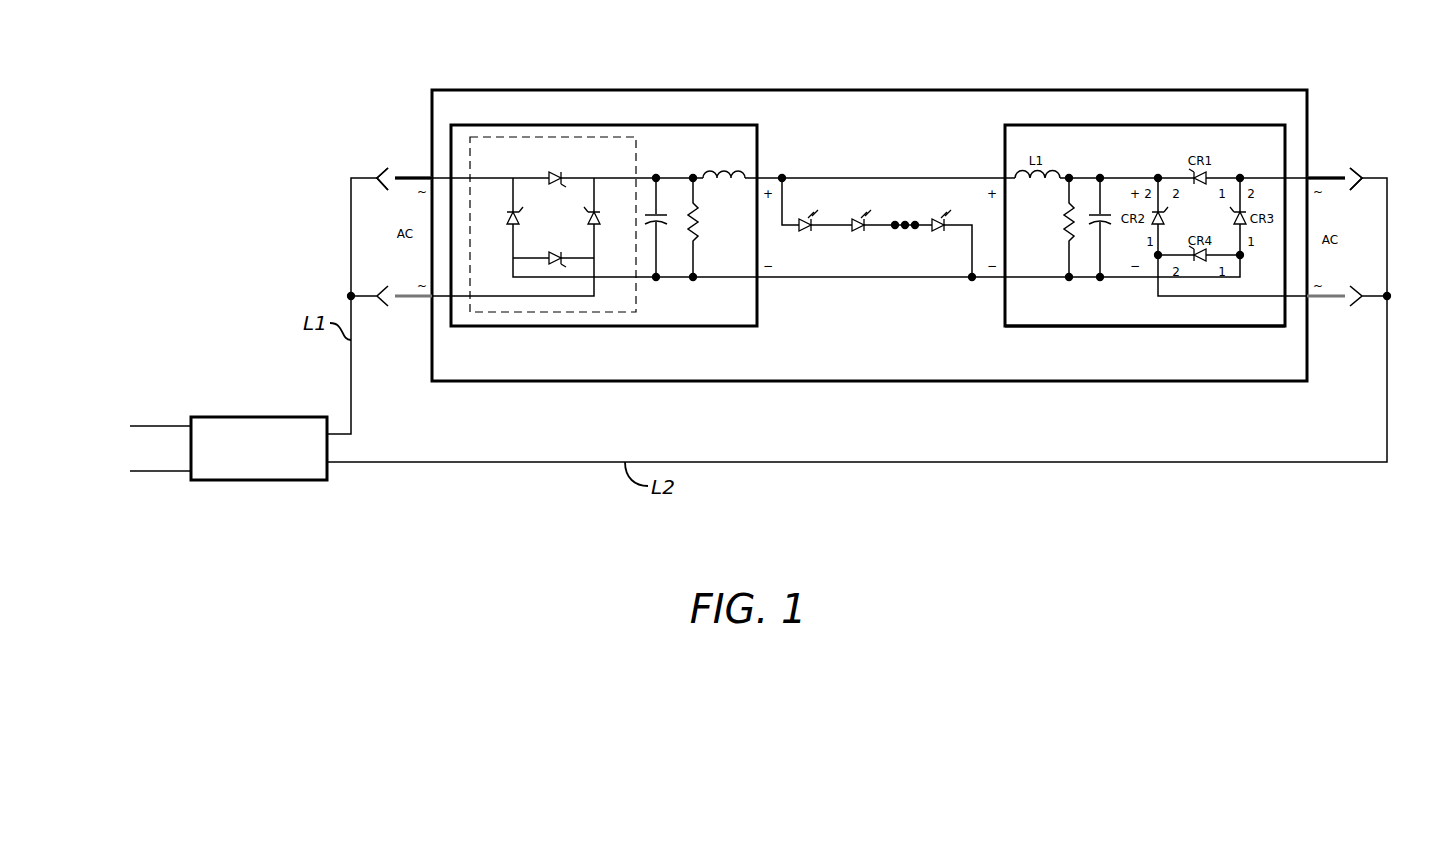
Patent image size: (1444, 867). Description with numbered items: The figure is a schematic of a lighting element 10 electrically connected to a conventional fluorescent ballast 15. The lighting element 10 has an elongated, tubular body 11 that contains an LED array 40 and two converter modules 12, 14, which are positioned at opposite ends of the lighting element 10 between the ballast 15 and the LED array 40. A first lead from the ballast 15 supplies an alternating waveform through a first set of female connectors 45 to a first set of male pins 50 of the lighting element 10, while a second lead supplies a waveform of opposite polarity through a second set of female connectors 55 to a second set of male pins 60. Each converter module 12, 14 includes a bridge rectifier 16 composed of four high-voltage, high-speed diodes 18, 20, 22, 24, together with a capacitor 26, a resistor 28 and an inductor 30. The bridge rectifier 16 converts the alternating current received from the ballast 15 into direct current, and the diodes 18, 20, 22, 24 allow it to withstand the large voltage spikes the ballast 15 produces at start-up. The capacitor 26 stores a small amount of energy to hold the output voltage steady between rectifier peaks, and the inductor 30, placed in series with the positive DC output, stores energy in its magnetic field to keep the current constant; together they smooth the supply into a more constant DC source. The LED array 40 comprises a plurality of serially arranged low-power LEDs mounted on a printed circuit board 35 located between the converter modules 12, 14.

The lighting element 10 is at (1100, 62).
The body 11 is at (1228, 90).
The converter module 12 is at (605, 125).
The converter module 14 is at (1143, 325).
The ballast 15 is at (245, 417).
The bridge rectifier 16 is at (490, 135).
The diode 18 is at (496, 233).
The diode 20 is at (553, 270).
The diode 22 is at (537, 155).
The diode 24 is at (615, 233).
The capacitor 26 is at (660, 225).
The resistor 28 is at (698, 232).
The inductor 30 is at (707, 165).
The printed circuit board 35 is at (912, 159).
The LED array 40 is at (873, 135).
The first set of female connectors 45 is at (383, 175).
The first set of male pins 50 is at (417, 178).
The second set of female connectors 55 is at (1352, 180).
The second set of male pins 60 is at (1318, 178).